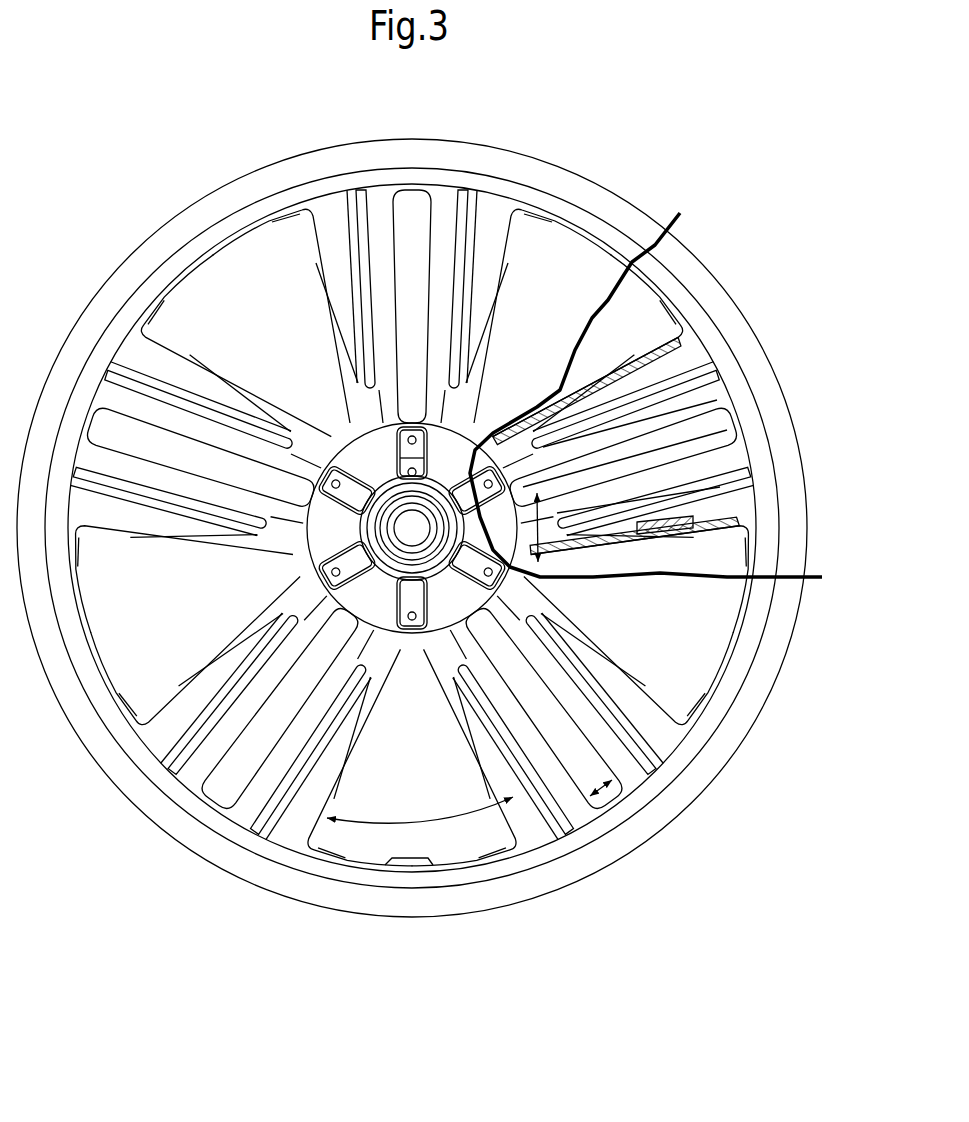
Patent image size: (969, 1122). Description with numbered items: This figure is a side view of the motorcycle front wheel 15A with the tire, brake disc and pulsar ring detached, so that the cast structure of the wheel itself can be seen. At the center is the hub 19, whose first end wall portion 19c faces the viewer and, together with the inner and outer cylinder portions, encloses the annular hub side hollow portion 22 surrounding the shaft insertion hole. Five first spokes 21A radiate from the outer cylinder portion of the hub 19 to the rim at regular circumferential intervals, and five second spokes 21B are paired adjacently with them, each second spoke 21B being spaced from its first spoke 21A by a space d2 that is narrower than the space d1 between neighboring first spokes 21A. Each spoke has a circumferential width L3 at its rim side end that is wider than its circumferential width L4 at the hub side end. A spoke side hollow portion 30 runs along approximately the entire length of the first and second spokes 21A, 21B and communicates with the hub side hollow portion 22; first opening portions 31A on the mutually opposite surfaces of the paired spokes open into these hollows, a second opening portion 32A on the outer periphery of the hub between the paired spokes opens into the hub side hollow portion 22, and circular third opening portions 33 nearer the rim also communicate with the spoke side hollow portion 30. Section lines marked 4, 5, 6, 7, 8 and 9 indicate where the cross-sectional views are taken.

The wheel 15A is at (187, 206).
The hub 19 is at (428, 632).
The first end wall portion 19c is at (320, 540).
The first spoke 21A is at (386, 200).
The second spoke 21B is at (443, 206).
The hub side hollow portion 22 is at (478, 607).
The spoke side hollow portion 30 is at (662, 347).
The first opening portion 31A is at (568, 368).
The second opening portion 32A is at (481, 577).
The third opening portion 33 is at (712, 372).
The width in the circumferential direction of the rim side end portion L3 is at (748, 473).
The width in the circumferential direction of the hub side end portion L4 is at (555, 515).
The space between the respective first spokes d1 is at (478, 830).
The space between the first spoke and the second spoke d2 is at (603, 792).
The section line IV-IV 4 is at (350, 108).
The section line V-V 5 is at (317, 207).
The section line VI-VI 6 is at (300, 245).
The section line VII-VII 7 is at (320, 308).
The section line VIII-VIII 8 is at (340, 368).
The section line IX-IX 9 is at (357, 420).